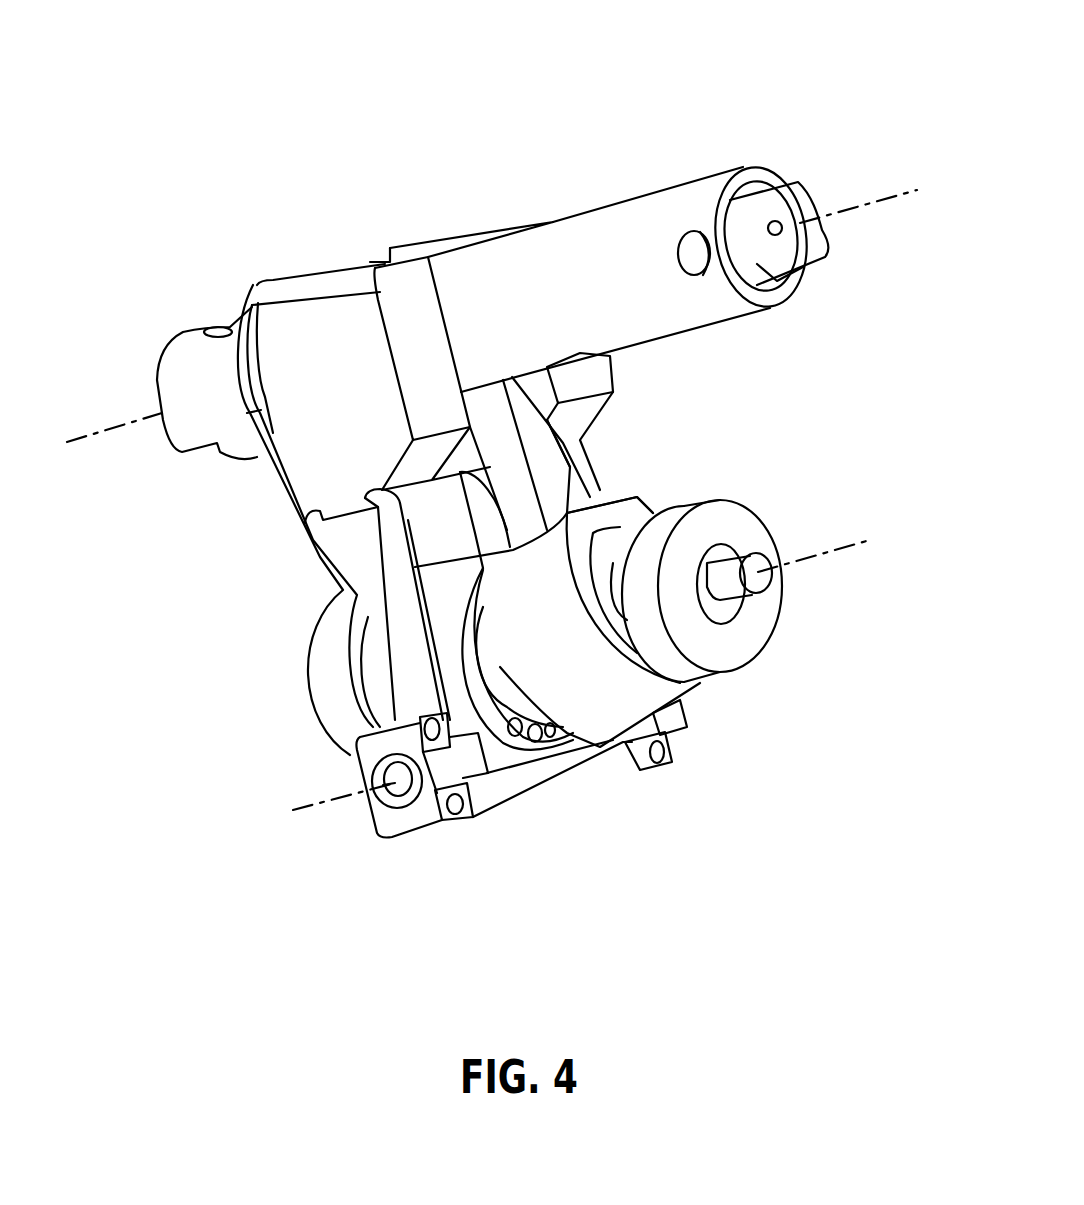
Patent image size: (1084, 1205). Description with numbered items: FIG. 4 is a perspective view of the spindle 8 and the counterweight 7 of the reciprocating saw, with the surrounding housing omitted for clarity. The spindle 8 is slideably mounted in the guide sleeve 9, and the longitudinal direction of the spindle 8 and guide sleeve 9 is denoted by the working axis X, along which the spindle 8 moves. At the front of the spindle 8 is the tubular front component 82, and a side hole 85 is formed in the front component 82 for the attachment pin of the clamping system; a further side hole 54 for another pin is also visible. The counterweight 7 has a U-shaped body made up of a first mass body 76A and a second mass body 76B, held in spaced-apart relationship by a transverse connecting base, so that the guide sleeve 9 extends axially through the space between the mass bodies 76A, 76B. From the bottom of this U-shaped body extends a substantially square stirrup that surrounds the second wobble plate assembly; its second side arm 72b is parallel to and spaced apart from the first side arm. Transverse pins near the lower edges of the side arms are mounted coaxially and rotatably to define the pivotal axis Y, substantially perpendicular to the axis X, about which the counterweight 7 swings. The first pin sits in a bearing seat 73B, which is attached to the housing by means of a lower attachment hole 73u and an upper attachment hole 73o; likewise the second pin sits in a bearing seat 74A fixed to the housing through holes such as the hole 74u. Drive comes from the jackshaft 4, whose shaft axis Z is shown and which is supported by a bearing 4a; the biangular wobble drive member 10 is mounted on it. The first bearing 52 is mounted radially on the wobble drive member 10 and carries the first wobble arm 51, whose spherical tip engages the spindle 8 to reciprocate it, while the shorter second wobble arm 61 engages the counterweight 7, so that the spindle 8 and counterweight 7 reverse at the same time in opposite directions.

The spindle 8 is at (815, 143).
The counterweight 7 is at (305, 243).
The guide sleeve 9 is at (572, 240).
The side hole 54 is at (692, 247).
The front component 82 is at (778, 233).
The side hole 85 is at (803, 267).
The second mass body 76B is at (313, 360).
The first mass body 76A is at (585, 382).
The second wobble arm 61 is at (438, 513).
The second side arm 72b is at (373, 550).
The upper attachment hole 73o is at (420, 730).
The bearing seat 73B is at (363, 760).
The lower attachment hole 73u is at (457, 822).
The biangular wobble drive member 10 is at (498, 695).
The first bearing 52 is at (600, 697).
The first wobble arm 51 is at (558, 502).
The jackshaft 4 is at (740, 570).
The bearing 4a is at (723, 530).
The bearing seat 74A is at (675, 720).
The hole 74u is at (667, 765).
The longitudinal direction X is at (507, 306).
The pivotal axis Y is at (329, 808).
The shaft axis Z is at (835, 553).